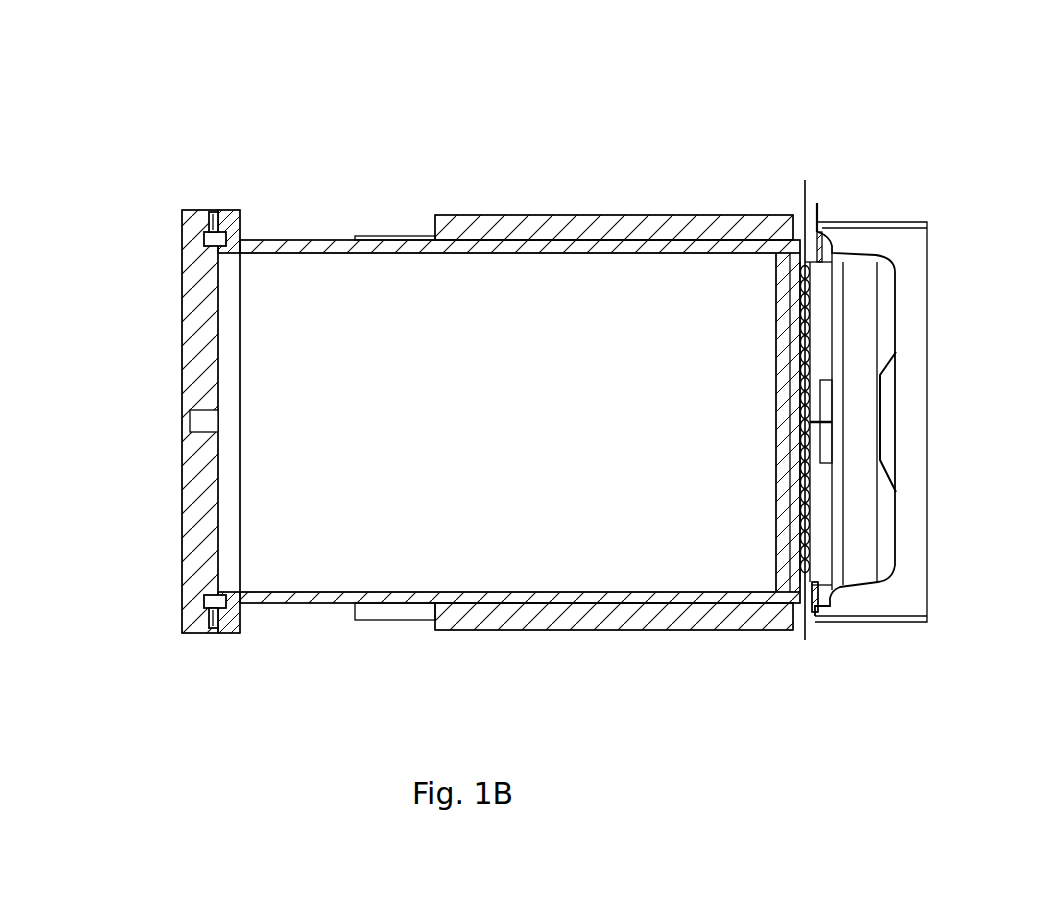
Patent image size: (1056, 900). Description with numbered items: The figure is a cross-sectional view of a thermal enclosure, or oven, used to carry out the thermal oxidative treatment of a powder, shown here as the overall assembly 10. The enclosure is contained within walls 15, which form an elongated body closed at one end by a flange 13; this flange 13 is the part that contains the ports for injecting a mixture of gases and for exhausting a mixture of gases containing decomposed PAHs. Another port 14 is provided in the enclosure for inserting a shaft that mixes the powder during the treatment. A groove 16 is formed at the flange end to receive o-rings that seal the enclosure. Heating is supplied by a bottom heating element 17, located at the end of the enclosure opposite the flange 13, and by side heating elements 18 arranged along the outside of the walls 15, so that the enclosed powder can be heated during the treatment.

The acoustic device assembly 10 is at (270, 158).
The flange 13 is at (181, 250).
The port 14 is at (212, 408).
The walls 15 is at (313, 240).
The groove 16 is at (214, 600).
The bottom heating element 17 is at (805, 183).
The side heating element 18 is at (611, 631).